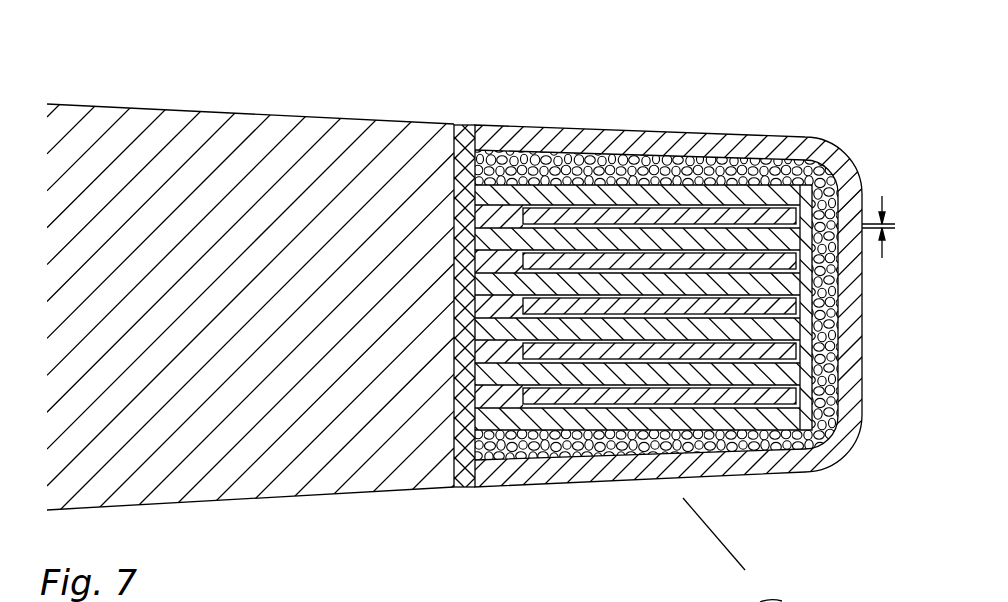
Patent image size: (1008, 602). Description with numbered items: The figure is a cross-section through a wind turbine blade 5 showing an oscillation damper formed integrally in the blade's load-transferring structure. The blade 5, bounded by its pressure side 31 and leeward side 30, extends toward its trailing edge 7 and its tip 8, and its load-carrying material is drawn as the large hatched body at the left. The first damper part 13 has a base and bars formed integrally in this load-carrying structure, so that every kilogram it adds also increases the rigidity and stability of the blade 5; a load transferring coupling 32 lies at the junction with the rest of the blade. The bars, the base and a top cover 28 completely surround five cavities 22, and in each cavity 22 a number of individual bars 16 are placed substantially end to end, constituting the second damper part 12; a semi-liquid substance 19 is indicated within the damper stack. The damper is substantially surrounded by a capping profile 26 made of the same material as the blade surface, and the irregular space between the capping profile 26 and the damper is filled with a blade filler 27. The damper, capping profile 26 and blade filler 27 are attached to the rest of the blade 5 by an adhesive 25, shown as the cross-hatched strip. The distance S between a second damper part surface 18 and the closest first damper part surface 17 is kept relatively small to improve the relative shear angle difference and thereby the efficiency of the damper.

The blade 5 is at (123, 210).
The pressure side 31 is at (272, 116).
The leeward side 30 is at (302, 497).
The adhesive 25 is at (463, 137).
The trailing edge 7 is at (863, 368).
The capping profile 26 is at (672, 140).
The blade filler 27 is at (576, 165).
The second damper part surface 18 is at (810, 170).
The first damper part surface 17 is at (766, 230).
The first damper part 13 is at (620, 417).
The semi-liquid substance 19 is at (747, 222).
The cavity 22 is at (570, 403).
The bar of second damper part 16 is at (753, 392).
The top cover 28 is at (800, 440).
The load transferring coupling 32 is at (502, 463).
The tip 8 is at (807, 601).
The second damper part 12 is at (590, 601).
The distance between first and second damper parts surfaces S is at (878, 244).